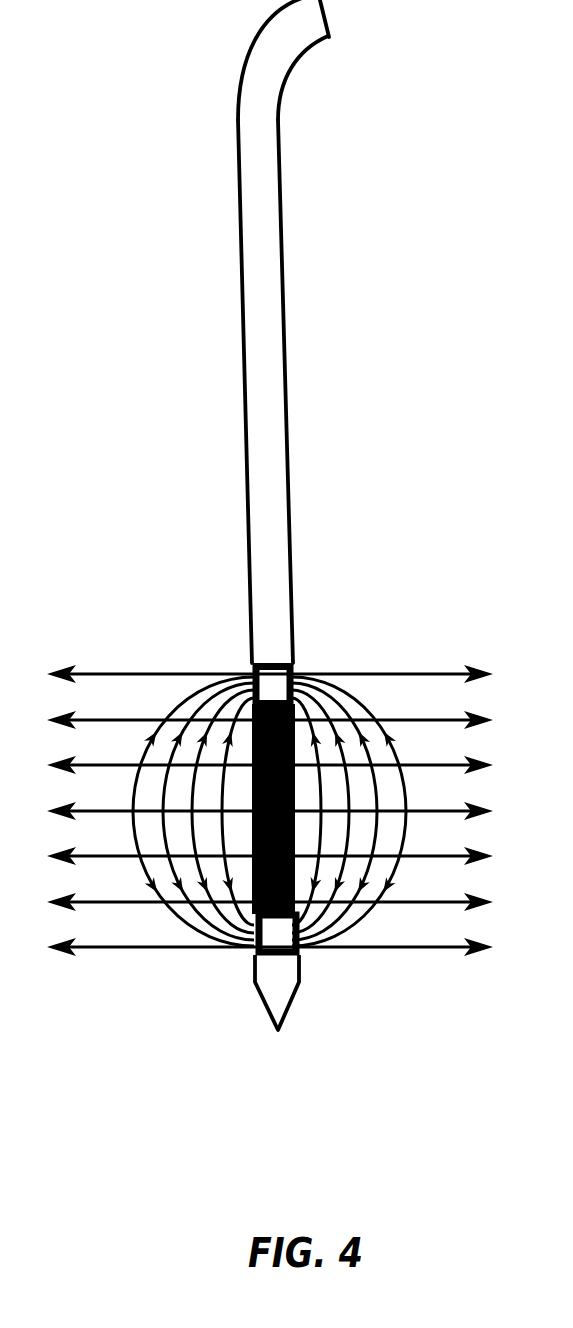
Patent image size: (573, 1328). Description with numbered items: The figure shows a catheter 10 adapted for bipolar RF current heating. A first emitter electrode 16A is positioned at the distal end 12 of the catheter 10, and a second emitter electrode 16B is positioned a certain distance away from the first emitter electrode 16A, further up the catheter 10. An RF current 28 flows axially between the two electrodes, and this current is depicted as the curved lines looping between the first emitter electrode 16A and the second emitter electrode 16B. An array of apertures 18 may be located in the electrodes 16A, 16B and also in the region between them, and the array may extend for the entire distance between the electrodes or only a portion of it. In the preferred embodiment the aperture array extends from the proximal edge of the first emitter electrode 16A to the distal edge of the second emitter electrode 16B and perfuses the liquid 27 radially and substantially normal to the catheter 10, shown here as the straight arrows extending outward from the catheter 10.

The catheter 10 is at (289, 507).
The distal end 12 is at (299, 996).
The first emitter electrode 16A is at (291, 666).
The second emitter electrode 16B is at (299, 960).
The array of apertures 18 is at (247, 916).
The liquid 27 is at (488, 665).
The RF current 28 is at (363, 720).